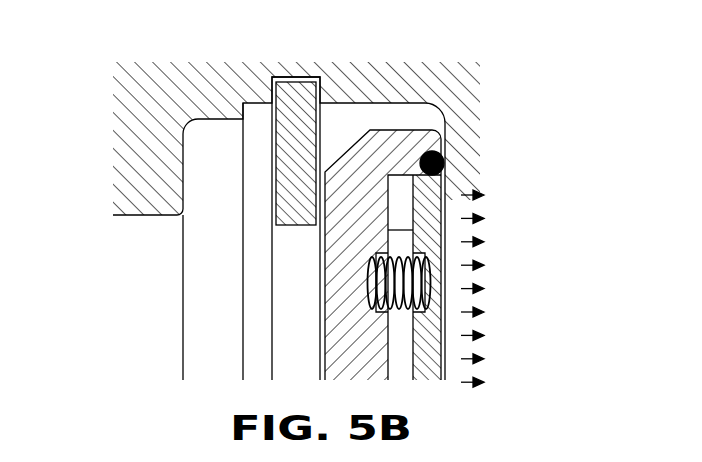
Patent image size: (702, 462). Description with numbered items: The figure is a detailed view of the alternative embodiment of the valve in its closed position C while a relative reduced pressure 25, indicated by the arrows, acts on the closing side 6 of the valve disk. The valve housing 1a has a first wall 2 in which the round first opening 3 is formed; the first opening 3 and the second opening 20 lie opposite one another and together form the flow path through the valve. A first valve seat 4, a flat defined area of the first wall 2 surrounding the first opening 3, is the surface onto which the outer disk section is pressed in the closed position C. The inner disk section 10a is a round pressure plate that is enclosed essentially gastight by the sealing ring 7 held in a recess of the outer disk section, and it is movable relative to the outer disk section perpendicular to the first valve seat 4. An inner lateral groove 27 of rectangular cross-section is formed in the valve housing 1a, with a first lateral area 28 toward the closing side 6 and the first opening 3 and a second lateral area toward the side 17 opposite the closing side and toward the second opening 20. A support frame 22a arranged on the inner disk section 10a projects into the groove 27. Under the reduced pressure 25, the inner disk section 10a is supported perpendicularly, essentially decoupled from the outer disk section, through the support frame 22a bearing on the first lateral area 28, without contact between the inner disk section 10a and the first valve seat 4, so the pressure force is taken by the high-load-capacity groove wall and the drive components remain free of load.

The valve housing 1a is at (505, 70).
The first wall 2 is at (478, 106).
The first opening 3 is at (517, 333).
The first valve seat 4 is at (460, 152).
The closing side 6 is at (497, 364).
The sealing ring 7 is at (445, 165).
The inner disk section 10a is at (445, 225).
The side opposite the closing side 17 is at (140, 364).
The second opening 20 is at (185, 335).
The support frame 22a is at (316, 146).
The reduced pressure 25 is at (470, 262).
The inner lateral groove 27 is at (300, 58).
The first lateral area 28 is at (335, 92).
The closed position C is at (226, 170).